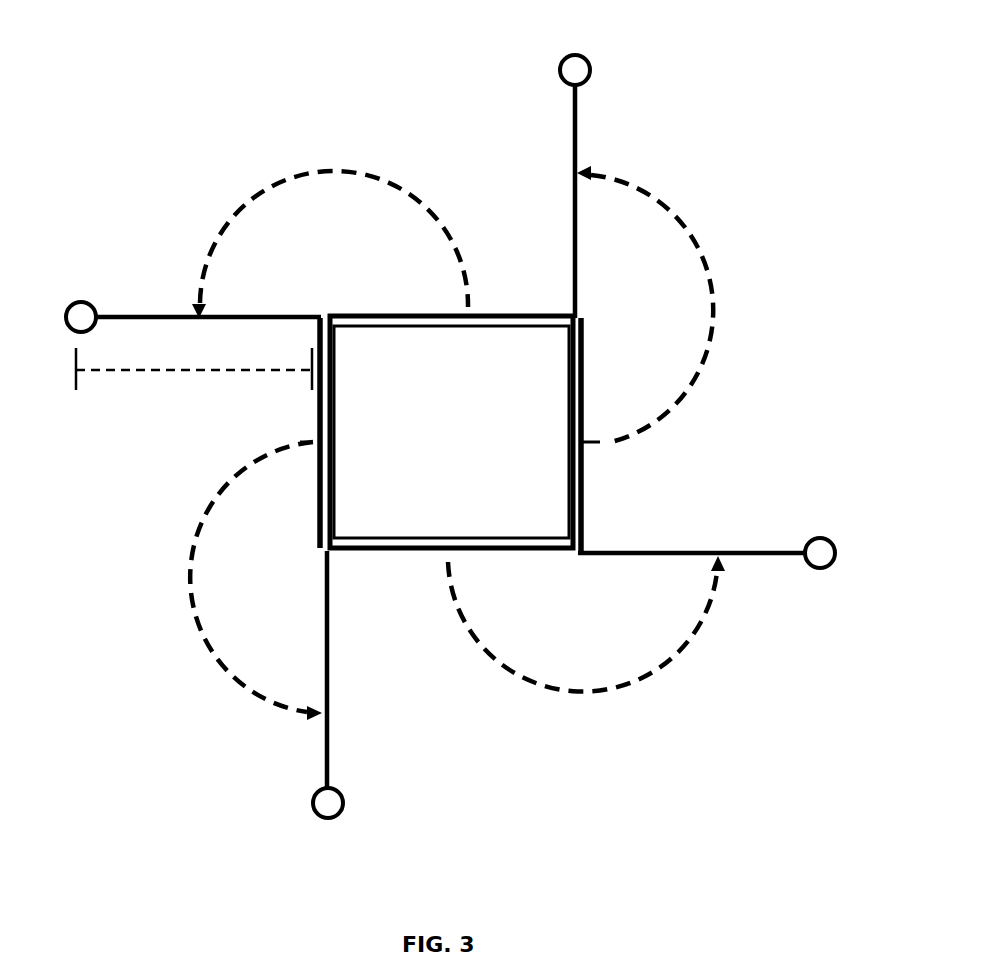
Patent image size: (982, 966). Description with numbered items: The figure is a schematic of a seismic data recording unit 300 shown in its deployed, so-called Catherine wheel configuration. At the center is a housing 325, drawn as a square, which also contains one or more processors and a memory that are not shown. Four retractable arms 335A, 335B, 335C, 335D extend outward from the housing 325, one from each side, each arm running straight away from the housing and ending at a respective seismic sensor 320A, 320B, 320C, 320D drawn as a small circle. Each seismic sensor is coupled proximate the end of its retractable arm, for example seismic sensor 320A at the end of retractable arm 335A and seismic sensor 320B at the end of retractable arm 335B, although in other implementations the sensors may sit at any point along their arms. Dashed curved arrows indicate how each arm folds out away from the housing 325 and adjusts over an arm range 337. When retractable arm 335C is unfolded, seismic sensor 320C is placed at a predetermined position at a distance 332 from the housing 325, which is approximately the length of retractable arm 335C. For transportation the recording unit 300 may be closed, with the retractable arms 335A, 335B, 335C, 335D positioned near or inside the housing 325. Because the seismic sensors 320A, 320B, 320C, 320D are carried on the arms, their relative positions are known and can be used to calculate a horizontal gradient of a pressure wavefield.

The seismic data recording unit 300 is at (305, 34).
The seismic sensor 320A is at (815, 538).
The seismic sensor 320B is at (566, 53).
The seismic sensor 320C is at (83, 301).
The seismic sensor 320D is at (327, 820).
The housing 325 is at (527, 322).
The distance 332 is at (210, 372).
The retractable arm 335A is at (658, 550).
The retractable arm 335B is at (577, 130).
The retractable arm 335C is at (235, 315).
The retractable arm 335D is at (330, 658).
The arm range 337 is at (380, 188).